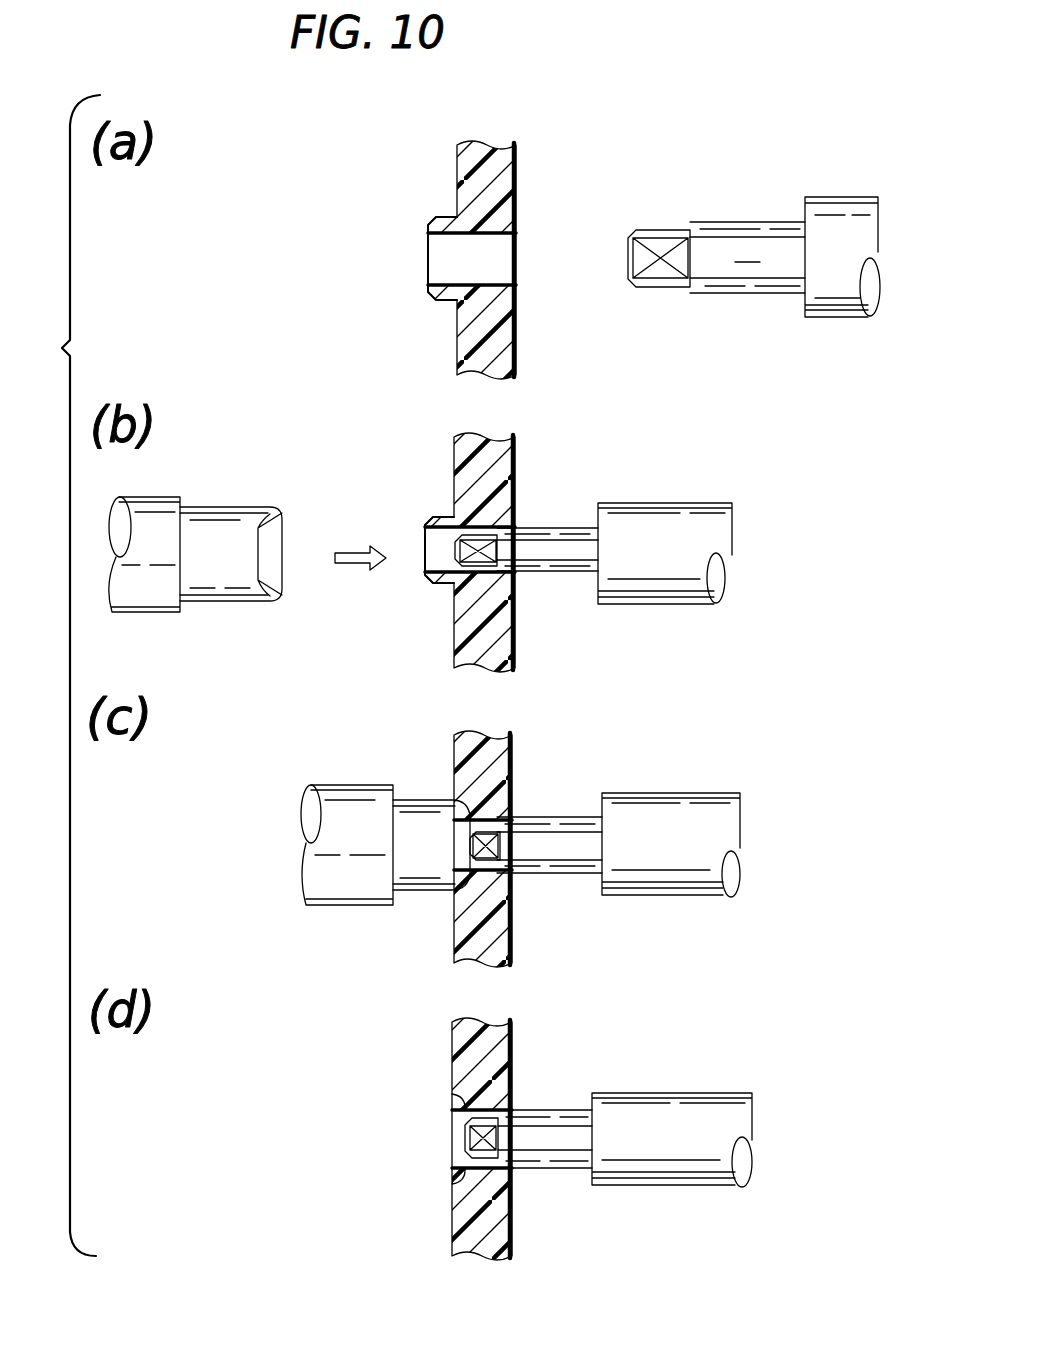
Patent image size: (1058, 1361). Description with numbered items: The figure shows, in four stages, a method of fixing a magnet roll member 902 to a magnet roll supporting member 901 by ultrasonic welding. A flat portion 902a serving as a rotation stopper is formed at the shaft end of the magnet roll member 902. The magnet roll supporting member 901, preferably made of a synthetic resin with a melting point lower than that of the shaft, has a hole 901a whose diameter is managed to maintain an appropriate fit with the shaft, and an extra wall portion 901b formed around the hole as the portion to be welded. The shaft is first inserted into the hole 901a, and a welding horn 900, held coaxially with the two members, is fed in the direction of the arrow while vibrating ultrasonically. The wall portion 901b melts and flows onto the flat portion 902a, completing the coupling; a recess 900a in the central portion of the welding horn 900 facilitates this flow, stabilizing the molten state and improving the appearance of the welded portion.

The welding horn 900 is at (232, 518).
The recess 900a is at (268, 565).
The magnet roll supporting member 901 is at (508, 185).
The hole 901a is at (508, 273).
The wall portion 901b is at (433, 297).
The magnet roll member 902 is at (826, 200).
The flat portion 902a is at (664, 234).